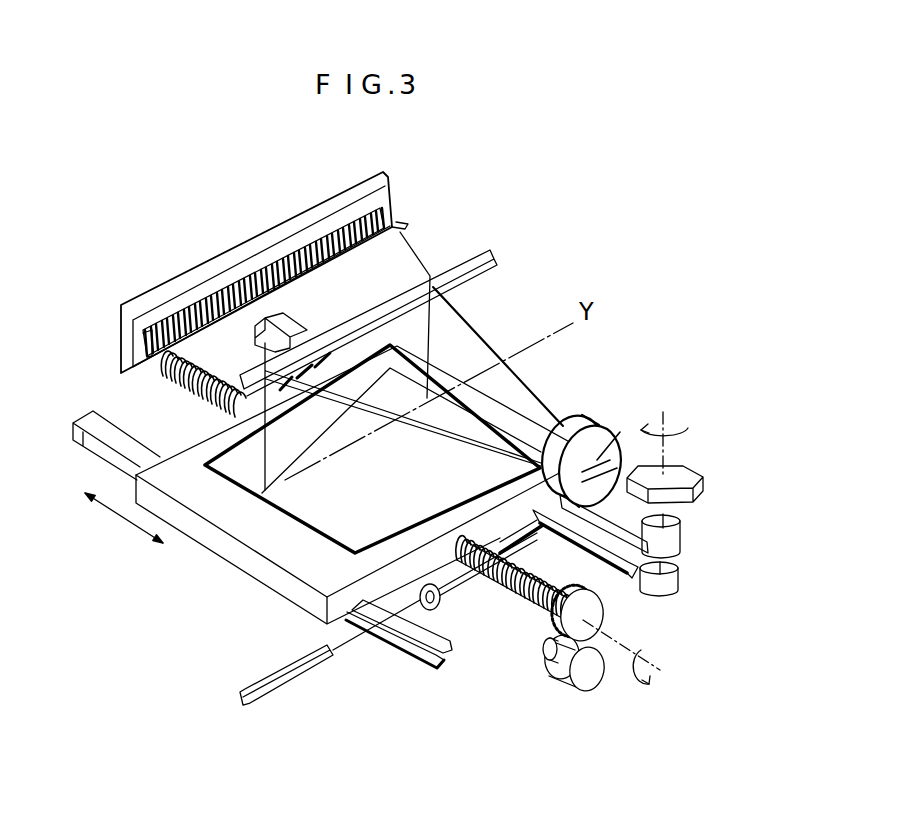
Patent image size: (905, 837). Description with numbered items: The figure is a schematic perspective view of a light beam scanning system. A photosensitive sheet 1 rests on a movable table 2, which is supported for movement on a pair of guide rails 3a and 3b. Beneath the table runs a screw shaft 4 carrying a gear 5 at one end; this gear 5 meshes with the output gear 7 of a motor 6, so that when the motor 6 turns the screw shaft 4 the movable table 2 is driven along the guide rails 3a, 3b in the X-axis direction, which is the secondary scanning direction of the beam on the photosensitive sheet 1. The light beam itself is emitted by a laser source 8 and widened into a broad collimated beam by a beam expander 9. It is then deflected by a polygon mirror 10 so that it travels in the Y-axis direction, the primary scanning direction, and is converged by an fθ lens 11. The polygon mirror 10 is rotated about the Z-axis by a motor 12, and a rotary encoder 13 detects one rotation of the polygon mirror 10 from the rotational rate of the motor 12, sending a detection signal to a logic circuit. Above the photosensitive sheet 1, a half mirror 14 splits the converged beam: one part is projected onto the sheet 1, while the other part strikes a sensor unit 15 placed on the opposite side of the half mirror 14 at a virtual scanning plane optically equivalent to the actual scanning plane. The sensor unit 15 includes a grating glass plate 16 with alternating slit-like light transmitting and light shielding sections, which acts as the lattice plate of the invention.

The photosensitive sheet 1 is at (290, 508).
The movable table 2 is at (228, 553).
The guide rail 3a is at (103, 428).
The guide rail 3b is at (298, 316).
The screw shaft 4 is at (510, 590).
The gear 5 is at (604, 609).
The motor 6 is at (566, 680).
The output gear 7 is at (546, 654).
The laser source 8 is at (298, 675).
The beam expander 9 is at (437, 606).
The polygon mirror 10 is at (703, 492).
The fθ lens 11 is at (594, 420).
The motor 12 is at (681, 549).
The rotary encoder 13 is at (673, 588).
The half mirror 14 is at (478, 257).
The sensor unit 15 is at (400, 210).
The grating glass plate 16 is at (140, 342).